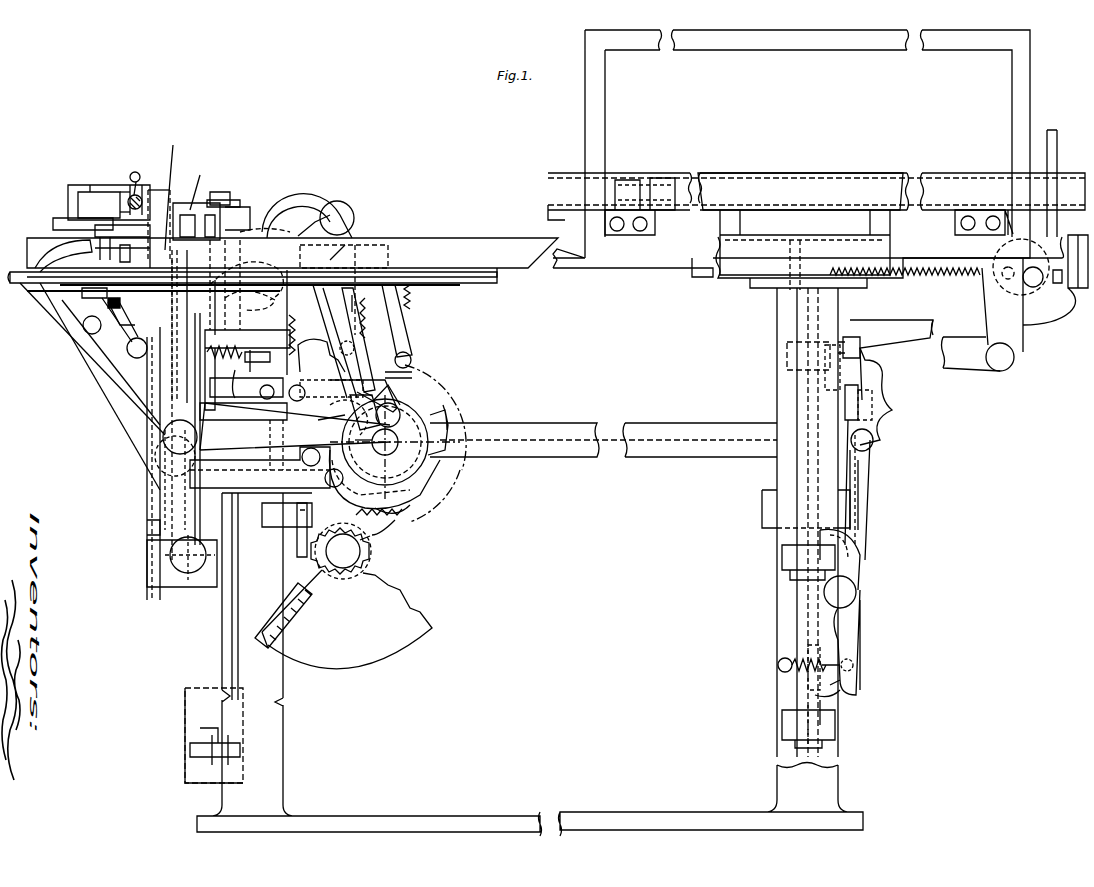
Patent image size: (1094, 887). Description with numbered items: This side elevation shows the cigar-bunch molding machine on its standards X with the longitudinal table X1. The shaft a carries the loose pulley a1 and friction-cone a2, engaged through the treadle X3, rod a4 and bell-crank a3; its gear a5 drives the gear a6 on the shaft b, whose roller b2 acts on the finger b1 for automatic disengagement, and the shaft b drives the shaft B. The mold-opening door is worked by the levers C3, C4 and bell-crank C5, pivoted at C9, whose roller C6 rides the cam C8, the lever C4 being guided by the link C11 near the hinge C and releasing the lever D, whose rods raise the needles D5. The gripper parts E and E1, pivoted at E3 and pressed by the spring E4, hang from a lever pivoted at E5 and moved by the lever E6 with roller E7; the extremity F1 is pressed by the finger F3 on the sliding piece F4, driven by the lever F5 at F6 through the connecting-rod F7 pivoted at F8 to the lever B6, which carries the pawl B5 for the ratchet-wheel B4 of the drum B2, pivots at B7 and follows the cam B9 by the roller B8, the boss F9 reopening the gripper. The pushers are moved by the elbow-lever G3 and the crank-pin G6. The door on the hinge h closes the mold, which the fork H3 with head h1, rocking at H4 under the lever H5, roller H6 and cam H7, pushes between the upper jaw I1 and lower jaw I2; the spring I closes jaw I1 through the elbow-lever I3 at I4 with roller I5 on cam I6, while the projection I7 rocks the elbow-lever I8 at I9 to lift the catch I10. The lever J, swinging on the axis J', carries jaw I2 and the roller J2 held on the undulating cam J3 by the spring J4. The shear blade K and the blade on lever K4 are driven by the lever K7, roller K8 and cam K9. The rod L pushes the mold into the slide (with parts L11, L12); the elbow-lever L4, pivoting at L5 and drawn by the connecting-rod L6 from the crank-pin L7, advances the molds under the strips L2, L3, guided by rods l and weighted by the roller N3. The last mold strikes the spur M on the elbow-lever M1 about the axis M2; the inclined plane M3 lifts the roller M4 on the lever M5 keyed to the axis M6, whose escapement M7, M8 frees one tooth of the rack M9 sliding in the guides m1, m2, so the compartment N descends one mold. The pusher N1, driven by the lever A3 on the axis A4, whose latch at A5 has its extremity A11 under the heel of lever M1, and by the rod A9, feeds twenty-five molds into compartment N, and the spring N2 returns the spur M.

The pigeonhole compartment N is at (807, 144).
The rammer or presser N1 is at (800, 231).
The spring N2 is at (905, 286).
The weighting-roller N3 is at (630, 183).
The downwardly-pressing strip L2 is at (816, 191).
The downwardly-pressing strip L3 is at (548, 200).
The rods l is at (1052, 140).
The movable spur M is at (1005, 215).
The elbow-lever M1 is at (1005, 331).
The axis M2 is at (978, 354).
The inclined plane M3 is at (880, 410).
The friction-roller M4 is at (873, 440).
The lever M5 is at (866, 482).
The axis M6 is at (855, 600).
The rack-escapement M7 is at (840, 559).
The rack-escapement M8 is at (819, 659).
The rack M9 is at (808, 695).
The slide m1 is at (790, 560).
The slide m2 is at (795, 727).
The lever A3 is at (805, 318).
The axis A4 is at (768, 510).
The pivot A5 is at (787, 356).
The rod A9 is at (860, 395).
The lever extremity A11 is at (845, 363).
The feet or standards X is at (530, 664).
The longitudinal table X1 is at (292, 257).
The pedal or treadle X3 is at (240, 757).
The shaft B is at (603, 440).
The head h1 is at (45, 258).
The hinge h is at (125, 238).
The hinge C is at (119, 231).
The lever C3 is at (60, 295).
The lever C4 is at (124, 328).
The bell-crank C5 is at (357, 318).
The friction-roller C6 is at (417, 354).
The cam C8 is at (412, 375).
The pivot C9 is at (387, 300).
The link C11 is at (133, 311).
The fork H3 is at (60, 290).
The pivot H4 is at (163, 468).
The lever H5 is at (260, 467).
The friction-roller H6 is at (311, 530).
The cam H7 is at (360, 447).
The lever extremity F1 is at (96, 180).
The finger F3 is at (70, 195).
The sliding piece F4 is at (53, 222).
The lever F5 is at (87, 323).
The pivot F6 is at (98, 362).
The connecting-rod F7 is at (228, 307).
The pivot F8 is at (257, 359).
The boss F9 is at (396, 512).
The gripper part E is at (142, 198).
The movable gripper part E1 is at (128, 192).
The pivot E3 is at (139, 185).
The spring E4 is at (131, 167).
The pivot E5 is at (138, 209).
The lever E6 is at (222, 212).
The friction-roller E7 is at (180, 420).
The slide D is at (94, 292).
The curved needles D5 is at (160, 215).
The elbow-lever G3 is at (150, 360).
The crank-pin G6 is at (192, 500).
The rod L is at (196, 221).
The elbow-lever L4 is at (173, 189).
The axis L5 is at (182, 561).
The connecting-rod L6 is at (295, 426).
The crank-pin L7 is at (386, 406).
The arm L11 is at (202, 183).
The block L12 is at (221, 178).
The shear blade K is at (225, 200).
The lever K4 is at (300, 232).
The lever K7 is at (342, 302).
The friction-roller K8 is at (340, 417).
The cam K9 is at (435, 443).
The spring I is at (398, 321).
The upper jaw I1 is at (307, 216).
The lower jaw I2 is at (225, 279).
The elbow-lever I3 is at (355, 340).
The pivot shaft I4 is at (337, 218).
The friction-roller I5 is at (365, 413).
The cam I6 is at (398, 395).
The projection I7 is at (330, 243).
The elbow-lever I8 is at (344, 290).
The pivot I9 is at (323, 341).
The movable catch I10 is at (180, 326).
The drum B2 is at (250, 295).
The ratchet-wheel B4 is at (246, 276).
The pawl B5 is at (265, 230).
The lever B6 is at (309, 357).
The pivot B7 is at (281, 425).
The roller B8 is at (373, 372).
The cam B9 is at (384, 479).
The lever J is at (238, 370).
The axis J' is at (185, 464).
The friction-roller J2 is at (257, 391).
The cam J3 is at (289, 368).
The spiral spring J4 is at (224, 359).
The shaft b is at (395, 447).
The cam or finger b1 is at (325, 479).
The roller b2 is at (305, 460).
The shaft a is at (341, 551).
The loose hollow pulley a1 is at (347, 619).
The friction-cone a2 is at (268, 615).
The bell-crank lever a3 is at (262, 512).
The rod a4 is at (238, 590).
The gear a5 is at (372, 547).
The gear a6 is at (400, 522).